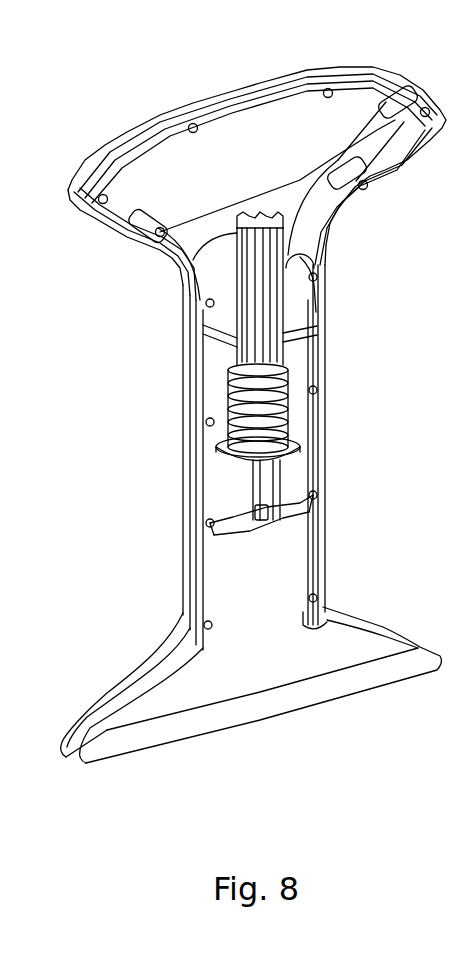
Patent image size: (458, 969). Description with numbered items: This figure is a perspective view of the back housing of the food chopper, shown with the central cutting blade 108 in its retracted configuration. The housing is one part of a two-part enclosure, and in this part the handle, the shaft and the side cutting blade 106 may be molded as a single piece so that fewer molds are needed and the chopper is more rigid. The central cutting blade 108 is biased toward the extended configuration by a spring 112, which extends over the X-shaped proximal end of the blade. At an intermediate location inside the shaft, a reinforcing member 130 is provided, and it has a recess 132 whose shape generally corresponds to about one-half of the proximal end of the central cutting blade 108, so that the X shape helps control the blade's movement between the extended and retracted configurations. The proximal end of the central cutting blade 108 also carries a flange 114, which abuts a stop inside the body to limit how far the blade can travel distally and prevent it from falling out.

The side cutting blade 106 is at (148, 658).
The central cutting blade 108 is at (297, 697).
The spring 112 is at (238, 402).
The flange 114 is at (235, 455).
The reinforcing member 130 is at (298, 341).
The recess 132 is at (238, 345).